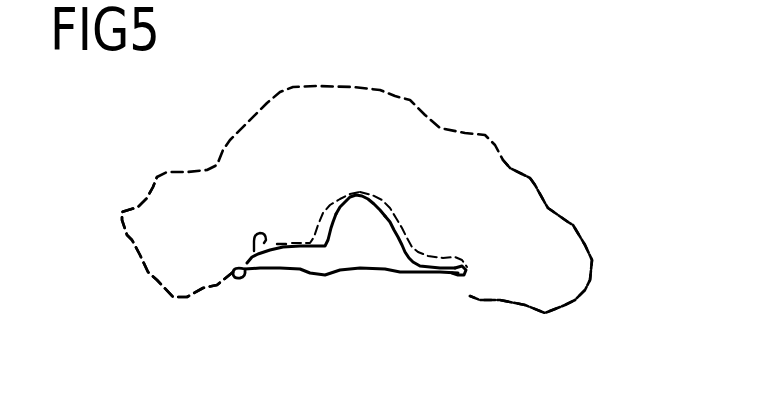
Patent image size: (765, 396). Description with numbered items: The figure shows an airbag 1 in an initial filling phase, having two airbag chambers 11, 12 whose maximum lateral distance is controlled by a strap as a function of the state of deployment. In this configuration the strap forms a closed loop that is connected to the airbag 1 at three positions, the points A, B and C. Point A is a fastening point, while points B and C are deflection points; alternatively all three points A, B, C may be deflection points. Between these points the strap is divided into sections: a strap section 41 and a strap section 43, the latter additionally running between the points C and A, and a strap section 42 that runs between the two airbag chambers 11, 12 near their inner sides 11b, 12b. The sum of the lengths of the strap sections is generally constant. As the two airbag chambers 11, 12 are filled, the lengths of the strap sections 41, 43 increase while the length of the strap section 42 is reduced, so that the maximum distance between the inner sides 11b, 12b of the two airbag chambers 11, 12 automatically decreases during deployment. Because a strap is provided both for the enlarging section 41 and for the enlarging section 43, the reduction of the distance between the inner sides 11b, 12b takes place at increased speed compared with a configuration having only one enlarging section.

The airbag 1 is at (398, 93).
The airbag chamber 11 is at (152, 248).
The airbag chamber 12 is at (567, 251).
The inner side of airbag chamber 11b is at (282, 244).
The inner side of airbag chamber 12b is at (408, 263).
The strap section 41 is at (402, 230).
The strap section 42 is at (367, 272).
The strap section 43 is at (308, 242).
The fastening point A is at (352, 197).
The deflection point B is at (466, 272).
The deflection point C is at (241, 276).